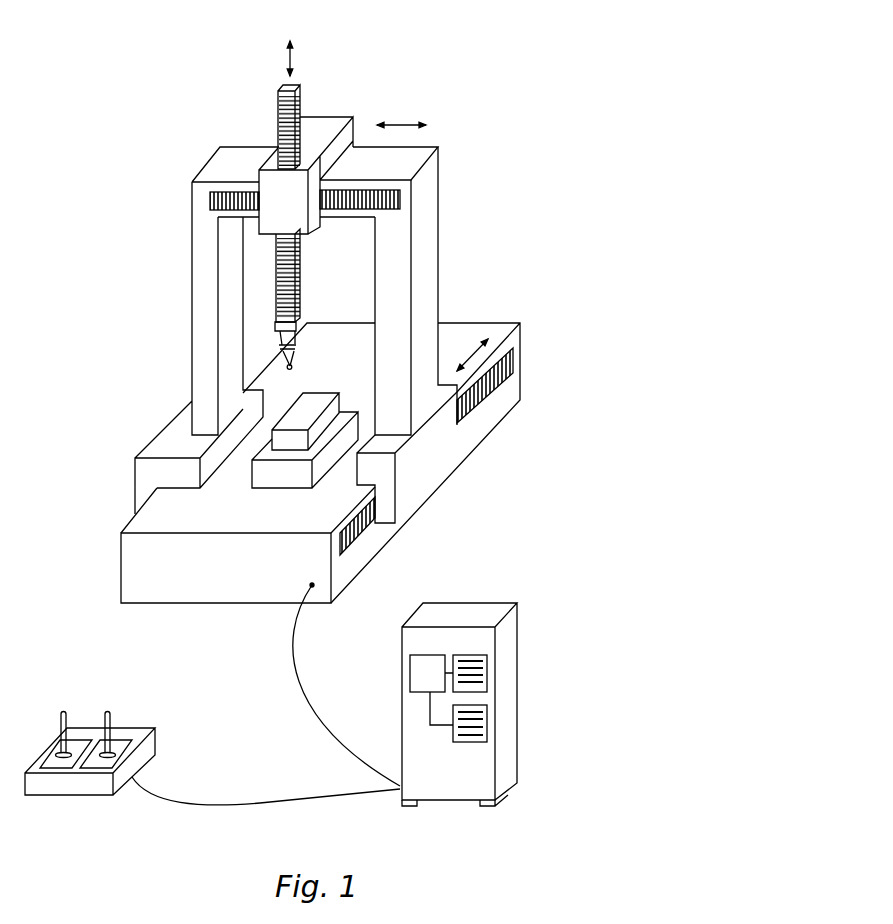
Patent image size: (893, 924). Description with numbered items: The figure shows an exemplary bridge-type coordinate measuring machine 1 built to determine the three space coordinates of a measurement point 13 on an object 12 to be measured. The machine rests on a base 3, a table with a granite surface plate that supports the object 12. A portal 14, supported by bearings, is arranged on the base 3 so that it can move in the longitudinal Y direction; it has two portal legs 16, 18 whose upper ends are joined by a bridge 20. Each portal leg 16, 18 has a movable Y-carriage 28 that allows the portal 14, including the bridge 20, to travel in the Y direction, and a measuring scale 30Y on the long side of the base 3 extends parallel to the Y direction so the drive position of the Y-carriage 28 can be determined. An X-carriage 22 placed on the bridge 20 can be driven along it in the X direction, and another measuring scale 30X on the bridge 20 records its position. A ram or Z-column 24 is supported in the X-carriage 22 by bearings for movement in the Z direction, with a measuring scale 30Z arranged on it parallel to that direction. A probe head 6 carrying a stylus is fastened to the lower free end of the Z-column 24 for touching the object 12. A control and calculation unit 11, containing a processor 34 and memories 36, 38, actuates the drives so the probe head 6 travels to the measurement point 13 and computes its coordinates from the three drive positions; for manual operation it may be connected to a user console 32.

The coordinate measuring machine 1 is at (459, 134).
The base 3 is at (128, 587).
The probe head 6 is at (310, 344).
The control and calculation unit 11 is at (460, 619).
The object 12 is at (293, 470).
The measurement point 13 is at (311, 411).
The portal 14 is at (188, 332).
The portal leg 16 is at (200, 262).
The portal leg 18 is at (430, 272).
The bridge 20 is at (218, 174).
The X-carriage 22 is at (275, 167).
The Z-column 24 is at (286, 89).
The Y-carriage 28 is at (432, 448).
The measuring scale 30X is at (400, 197).
The measuring scale 30Y is at (490, 392).
The measuring scale 30Z is at (289, 115).
The user console 32 is at (150, 710).
The processor 34 is at (408, 668).
The memory 36 is at (480, 687).
The memory 38 is at (485, 725).